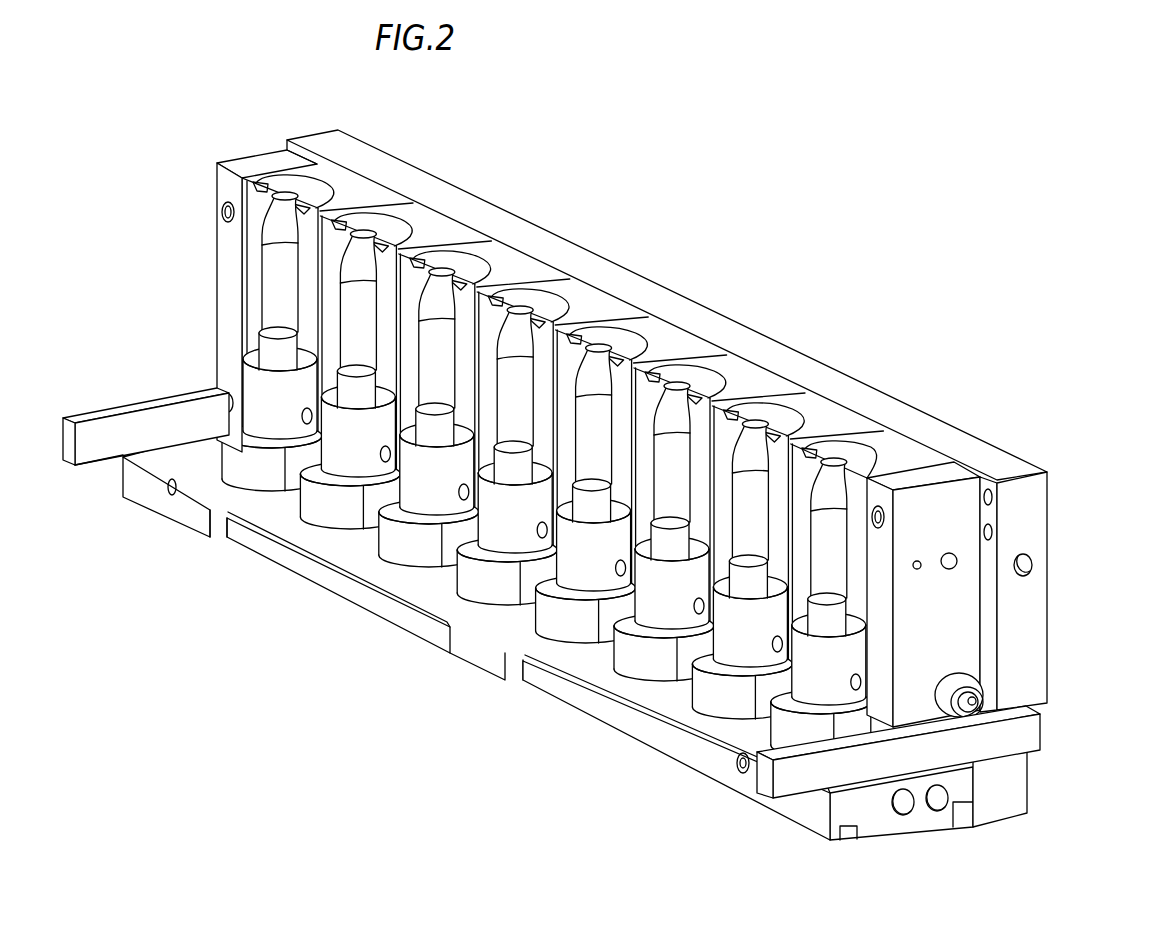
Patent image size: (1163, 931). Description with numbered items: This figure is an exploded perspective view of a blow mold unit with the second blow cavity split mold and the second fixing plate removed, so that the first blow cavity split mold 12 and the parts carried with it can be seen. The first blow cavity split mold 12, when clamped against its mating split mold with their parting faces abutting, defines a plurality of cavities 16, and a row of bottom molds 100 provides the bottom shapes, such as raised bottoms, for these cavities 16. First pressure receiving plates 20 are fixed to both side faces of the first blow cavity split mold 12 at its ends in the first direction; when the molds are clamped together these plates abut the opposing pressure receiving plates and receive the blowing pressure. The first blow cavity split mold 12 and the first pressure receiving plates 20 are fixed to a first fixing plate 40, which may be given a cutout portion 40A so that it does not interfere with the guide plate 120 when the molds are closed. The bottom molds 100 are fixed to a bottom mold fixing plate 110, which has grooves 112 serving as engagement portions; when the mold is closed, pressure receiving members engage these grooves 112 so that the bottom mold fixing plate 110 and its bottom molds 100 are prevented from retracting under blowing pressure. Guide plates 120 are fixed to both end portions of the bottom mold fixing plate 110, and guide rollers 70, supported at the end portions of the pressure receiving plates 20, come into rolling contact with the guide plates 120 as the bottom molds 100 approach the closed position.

The first blow cavity split mold 12 is at (412, 206).
The cavities 16 is at (278, 222).
The first pressure receiving plates 20 is at (255, 162).
The first fixing plate 40 is at (933, 420).
The cutout portion 40A is at (1007, 783).
The guide rollers 70 is at (958, 676).
The bottom molds 100 is at (503, 526).
The bottom mold fixing plate 110 is at (808, 815).
The grooves 112 is at (347, 590).
The guide plates 120 is at (147, 408).